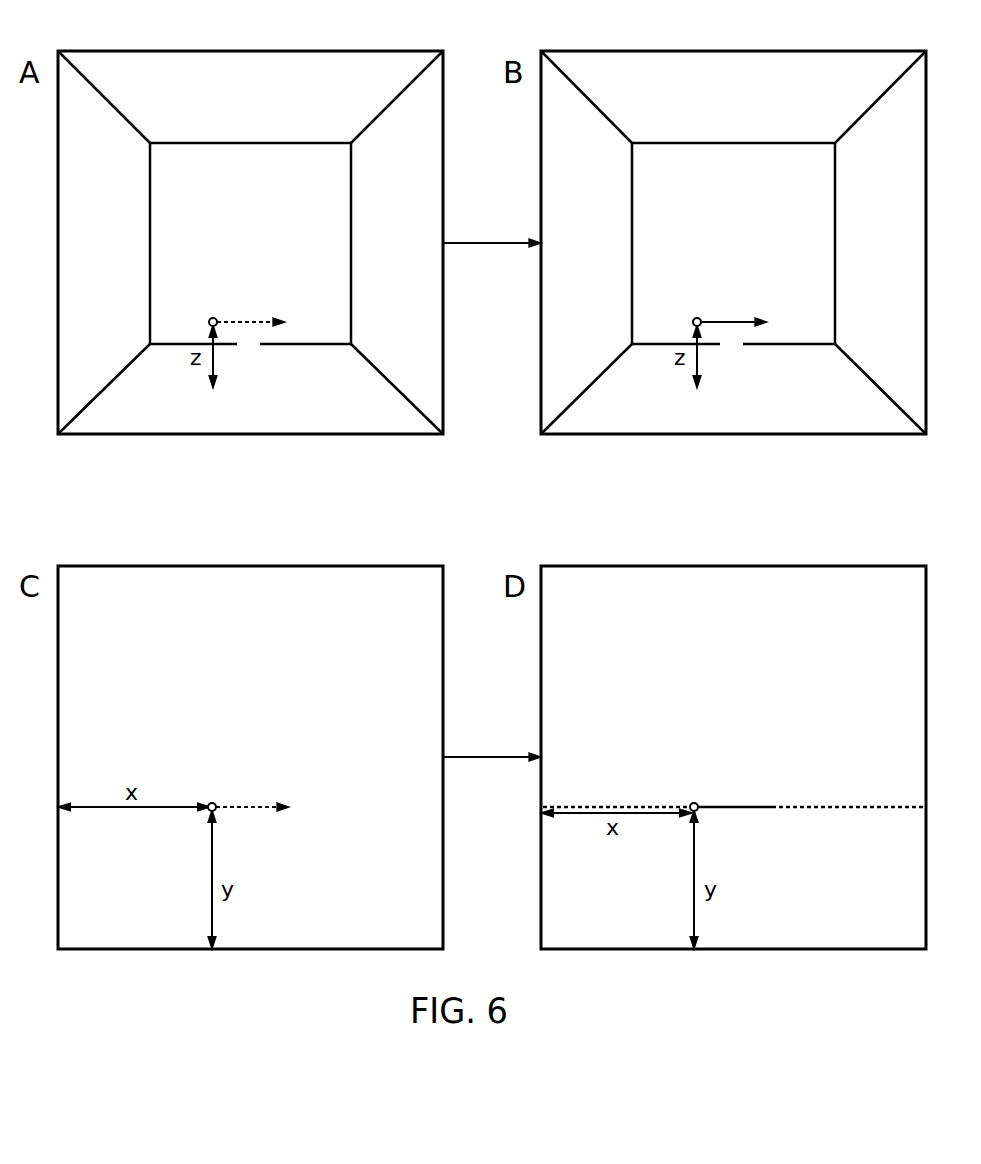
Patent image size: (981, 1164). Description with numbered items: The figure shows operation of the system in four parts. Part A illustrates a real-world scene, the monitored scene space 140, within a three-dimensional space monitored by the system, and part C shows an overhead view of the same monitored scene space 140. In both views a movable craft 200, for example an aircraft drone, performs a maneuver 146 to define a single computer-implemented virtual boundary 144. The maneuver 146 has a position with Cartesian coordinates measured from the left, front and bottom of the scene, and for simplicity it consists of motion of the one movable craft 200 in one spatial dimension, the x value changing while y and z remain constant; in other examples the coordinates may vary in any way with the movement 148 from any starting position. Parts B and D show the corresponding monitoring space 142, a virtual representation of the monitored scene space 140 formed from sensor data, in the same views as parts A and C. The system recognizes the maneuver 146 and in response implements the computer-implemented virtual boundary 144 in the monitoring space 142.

The monitored scene space 140 is at (320, 73).
The monitoring space 142 is at (804, 73).
The computer-implemented virtual boundary 144 is at (750, 325).
The maneuver 146 is at (268, 325).
The movement 148 is at (286, 306).
The movable craft 200 is at (212, 318).